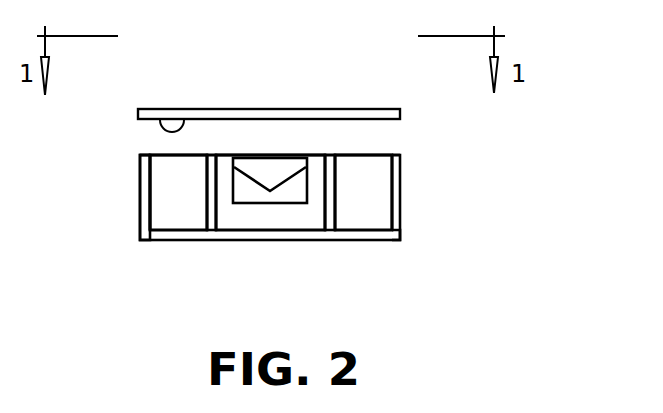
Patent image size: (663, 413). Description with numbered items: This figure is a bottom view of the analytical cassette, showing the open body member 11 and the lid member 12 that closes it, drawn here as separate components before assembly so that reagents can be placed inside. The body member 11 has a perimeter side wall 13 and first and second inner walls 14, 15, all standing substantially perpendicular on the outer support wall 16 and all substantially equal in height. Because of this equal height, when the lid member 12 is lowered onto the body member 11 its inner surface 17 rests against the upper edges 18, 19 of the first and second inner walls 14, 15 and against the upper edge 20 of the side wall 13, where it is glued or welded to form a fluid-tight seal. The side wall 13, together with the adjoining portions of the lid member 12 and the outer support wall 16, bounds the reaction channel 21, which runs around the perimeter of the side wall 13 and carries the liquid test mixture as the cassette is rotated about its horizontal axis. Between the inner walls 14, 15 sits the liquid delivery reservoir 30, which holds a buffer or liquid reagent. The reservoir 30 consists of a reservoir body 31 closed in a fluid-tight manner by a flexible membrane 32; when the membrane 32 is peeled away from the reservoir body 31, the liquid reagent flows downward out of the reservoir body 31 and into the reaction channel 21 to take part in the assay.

The body member 11 is at (403, 212).
The lid member 12 is at (400, 112).
The perimeter side wall 13 is at (140, 190).
The first inner wall 14 is at (203, 212).
The second inner wall 15 is at (337, 212).
The outer support wall 16 is at (397, 242).
The inner surface 17 is at (158, 120).
The upper edge 18 is at (209, 155).
The upper edge 19 is at (332, 155).
The upper edge 20 is at (138, 153).
The reaction channel 21 is at (168, 208).
The liquid delivery reservoir 30 is at (242, 238).
The reservoir body 31 is at (273, 203).
The membrane 32 is at (268, 155).